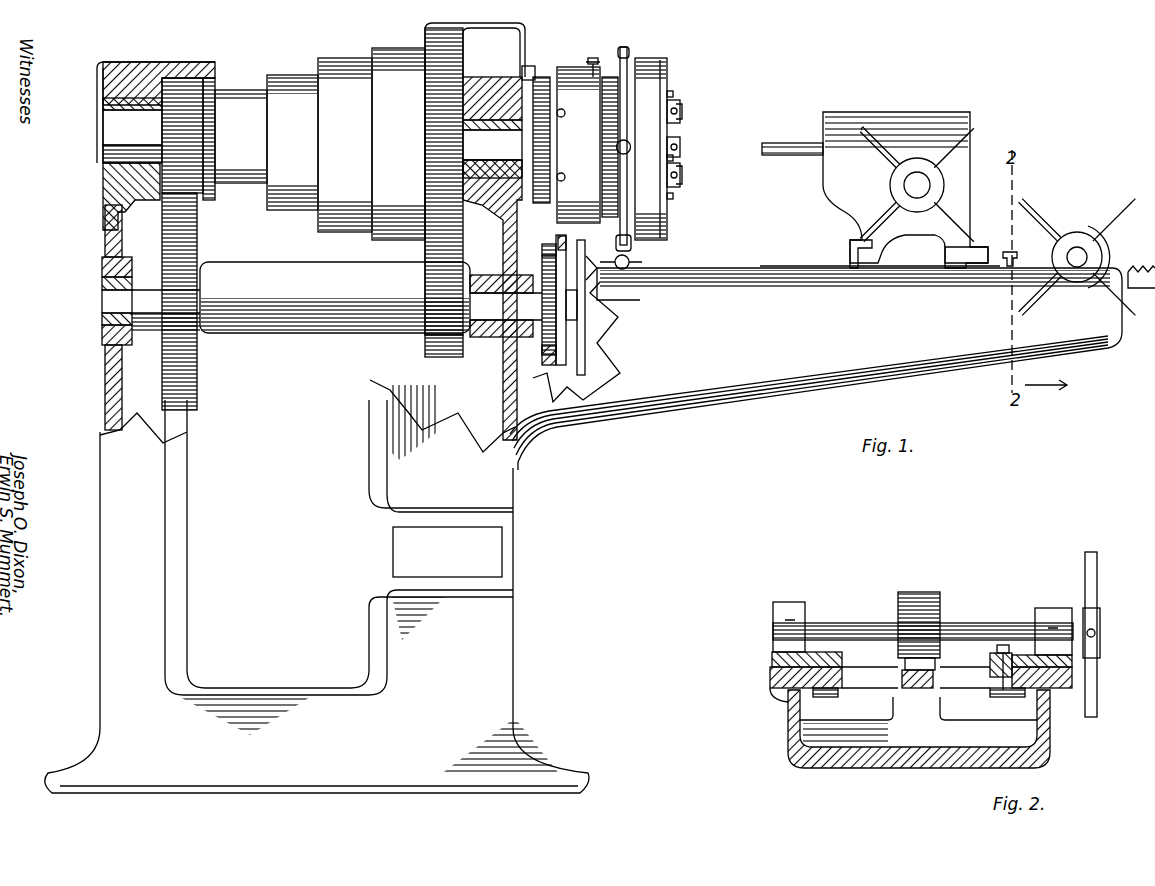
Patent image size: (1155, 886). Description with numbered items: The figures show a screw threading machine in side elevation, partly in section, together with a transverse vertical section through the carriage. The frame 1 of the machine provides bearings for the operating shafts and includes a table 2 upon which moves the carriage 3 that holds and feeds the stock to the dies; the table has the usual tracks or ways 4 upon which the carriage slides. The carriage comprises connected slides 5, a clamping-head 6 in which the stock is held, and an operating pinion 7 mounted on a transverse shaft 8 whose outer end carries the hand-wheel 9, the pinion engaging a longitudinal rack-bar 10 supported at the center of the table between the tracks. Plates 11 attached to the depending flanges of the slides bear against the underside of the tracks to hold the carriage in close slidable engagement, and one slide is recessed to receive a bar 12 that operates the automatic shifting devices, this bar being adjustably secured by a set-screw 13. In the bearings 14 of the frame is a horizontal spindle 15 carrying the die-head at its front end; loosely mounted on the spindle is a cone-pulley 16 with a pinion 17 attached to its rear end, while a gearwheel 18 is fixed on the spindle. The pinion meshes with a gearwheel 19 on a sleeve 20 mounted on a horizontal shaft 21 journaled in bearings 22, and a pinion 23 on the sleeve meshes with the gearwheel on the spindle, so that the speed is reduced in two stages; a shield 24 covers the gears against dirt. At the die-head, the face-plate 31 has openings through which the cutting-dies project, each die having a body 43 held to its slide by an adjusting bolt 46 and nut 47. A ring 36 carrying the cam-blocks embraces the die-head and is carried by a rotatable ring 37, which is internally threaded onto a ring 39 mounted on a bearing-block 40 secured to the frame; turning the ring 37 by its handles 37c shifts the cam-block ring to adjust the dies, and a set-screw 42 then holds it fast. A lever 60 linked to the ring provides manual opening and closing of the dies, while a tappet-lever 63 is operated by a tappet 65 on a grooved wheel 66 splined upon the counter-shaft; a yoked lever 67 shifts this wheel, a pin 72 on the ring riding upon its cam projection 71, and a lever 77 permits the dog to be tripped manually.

In FIG. 1, the frame 1 is at (380, 486).
In FIG. 1, the table 2 is at (816, 369).
In FIG. 1, the carriage 3 is at (862, 222).
In FIG. 2, the carriage 3 is at (922, 618).
In FIG. 1, the tracks or ways 4 is at (806, 267).
In FIG. 2, the tracks or ways 4 is at (770, 684).
In FIG. 1, the connected slides 5 is at (850, 260).
In FIG. 2, the connected slides 5 is at (772, 660).
In FIG. 1, the clamping-head 6 is at (910, 184).
In FIG. 2, the operating pinion 7 is at (898, 600).
In FIG. 2, the transverse shaft 8 is at (984, 624).
In FIG. 1, the hand-wheel 9 is at (1078, 232).
In FIG. 2, the hand-wheel 9 is at (1100, 626).
In FIG. 2, the rack-bar 10 is at (902, 680).
In FIG. 2, the plates 11 is at (838, 695).
In FIG. 1, the bar 12 is at (1142, 268).
In FIG. 2, the bar 12 is at (990, 672).
In FIG. 1, the set-screw 13 is at (1008, 252).
In FIG. 2, the set-screw 13 is at (1004, 645).
In FIG. 1, the bearings 14 is at (98, 82).
In FIG. 1, the spindle 15 is at (103, 139).
In FIG. 1, the cone-pulley 16 is at (280, 74).
In FIG. 1, the pinion 17 is at (188, 76).
In FIG. 1, the gearwheel 18 is at (425, 42).
In FIG. 1, the gearwheel 19 is at (198, 372).
In FIG. 1, the sleeve 20 is at (299, 334).
In FIG. 1, the shaft 21 is at (102, 300).
In FIG. 1, the bearings 22 is at (102, 339).
In FIG. 1, the pinion 23 is at (437, 357).
In FIG. 1, the shield 24 is at (140, 68).
In FIG. 1, the face-plate 31 is at (668, 77).
In FIG. 1, the ring 36 is at (646, 59).
In FIG. 1, the rotatable ring 37 is at (613, 76).
In FIG. 1, the handles 37c is at (625, 52).
In FIG. 1, the ring 39 is at (573, 78).
In FIG. 1, the bearing-block 40 is at (533, 137).
In FIG. 1, the set-screw 42 is at (593, 57).
In FIG. 1, the die body 43 is at (674, 95).
In FIG. 1, the adjusting bolt 46 is at (681, 120).
In FIG. 1, the nut 47 is at (682, 106).
In FIG. 1, the lever 60 is at (617, 245).
In FIG. 1, the tappet-lever 63 is at (586, 358).
In FIG. 1, the tappet 65 is at (568, 340).
In FIG. 1, the grooved wheel 66 is at (578, 312).
In FIG. 1, the yoked lever 67 is at (546, 358).
In FIG. 1, the cam projection 71 is at (555, 249).
In FIG. 1, the pin 72 is at (558, 241).
In FIG. 1, the lever 77 is at (636, 262).